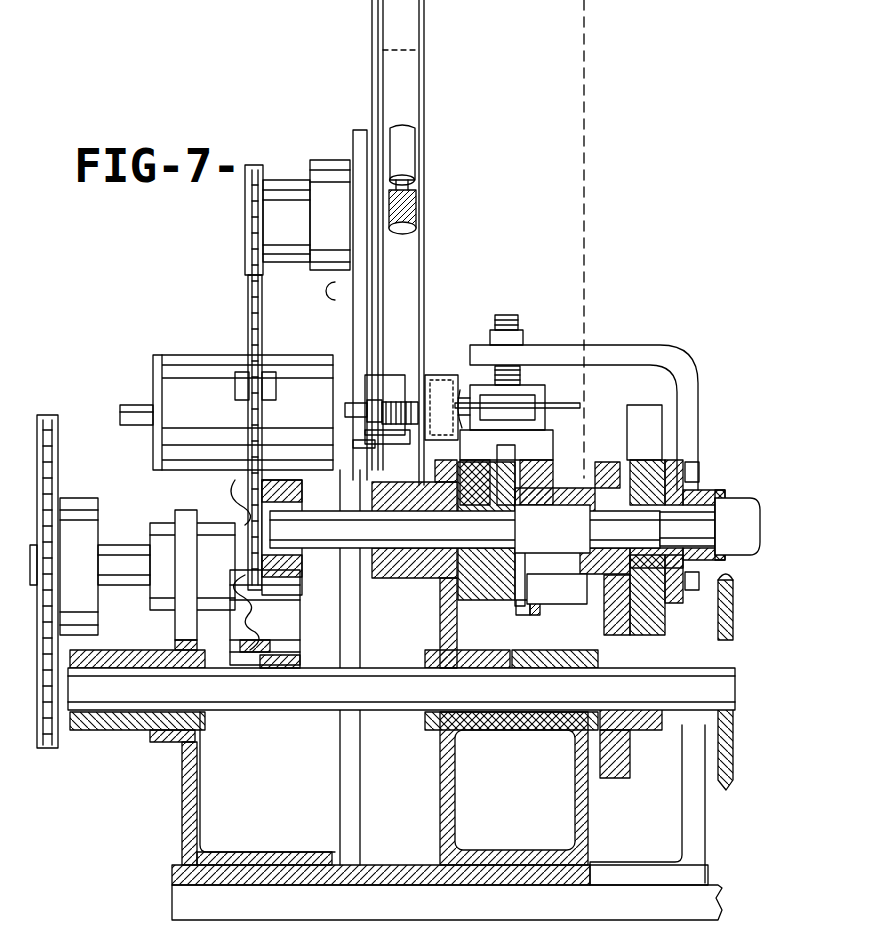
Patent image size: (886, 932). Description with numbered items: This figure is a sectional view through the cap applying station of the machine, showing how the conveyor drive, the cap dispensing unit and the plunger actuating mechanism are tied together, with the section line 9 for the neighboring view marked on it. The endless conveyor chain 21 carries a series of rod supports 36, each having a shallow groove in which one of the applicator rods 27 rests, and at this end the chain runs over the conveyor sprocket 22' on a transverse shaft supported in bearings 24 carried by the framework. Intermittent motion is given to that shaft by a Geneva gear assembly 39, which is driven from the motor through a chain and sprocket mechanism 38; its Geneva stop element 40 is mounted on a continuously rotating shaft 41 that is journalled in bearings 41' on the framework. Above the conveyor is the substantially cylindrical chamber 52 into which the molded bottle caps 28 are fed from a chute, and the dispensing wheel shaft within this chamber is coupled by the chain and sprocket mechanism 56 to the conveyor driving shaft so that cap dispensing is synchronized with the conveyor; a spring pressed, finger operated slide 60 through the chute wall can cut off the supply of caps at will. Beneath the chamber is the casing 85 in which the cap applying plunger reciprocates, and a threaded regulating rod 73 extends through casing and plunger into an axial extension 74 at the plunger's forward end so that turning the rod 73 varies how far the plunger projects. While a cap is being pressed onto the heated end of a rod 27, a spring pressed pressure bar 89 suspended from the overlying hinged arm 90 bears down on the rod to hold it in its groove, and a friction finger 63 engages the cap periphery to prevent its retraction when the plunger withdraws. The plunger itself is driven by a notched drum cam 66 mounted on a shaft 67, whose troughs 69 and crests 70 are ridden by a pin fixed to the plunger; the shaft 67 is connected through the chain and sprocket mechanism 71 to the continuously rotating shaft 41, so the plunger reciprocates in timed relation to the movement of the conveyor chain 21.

The section line for FIG. 9 is at (614, 458).
The conveyor chain 21 is at (524, 623).
The conveyor sprocket 22' is at (485, 544).
The bearings 24 is at (379, 575).
The rods 27 is at (560, 404).
The bottle caps 28 is at (440, 375).
The rod supports 36 is at (466, 398).
The chain and sprocket mechanism 38 is at (726, 620).
The Geneva gear assembly 39 is at (712, 500).
The Geneva stop element 40 is at (655, 733).
The shaft 41 is at (401, 708).
The bearings 41' is at (334, 717).
The cylindrical chamber 52 is at (400, 78).
The chain and sprocket mechanism 56 is at (248, 284).
The slide 60 is at (418, 200).
The friction finger 63 is at (410, 446).
The drum cam 66 is at (316, 631).
The shaft 67 is at (128, 542).
The troughs 69 is at (272, 625).
The crests 70 is at (250, 554).
The chain and sprocket mechanism 71 is at (55, 452).
The regulating rod 73 is at (130, 405).
The axial extension 74 is at (388, 378).
The casing 85 is at (186, 357).
The pressure bar 89 is at (530, 388).
The arm 90 is at (608, 350).